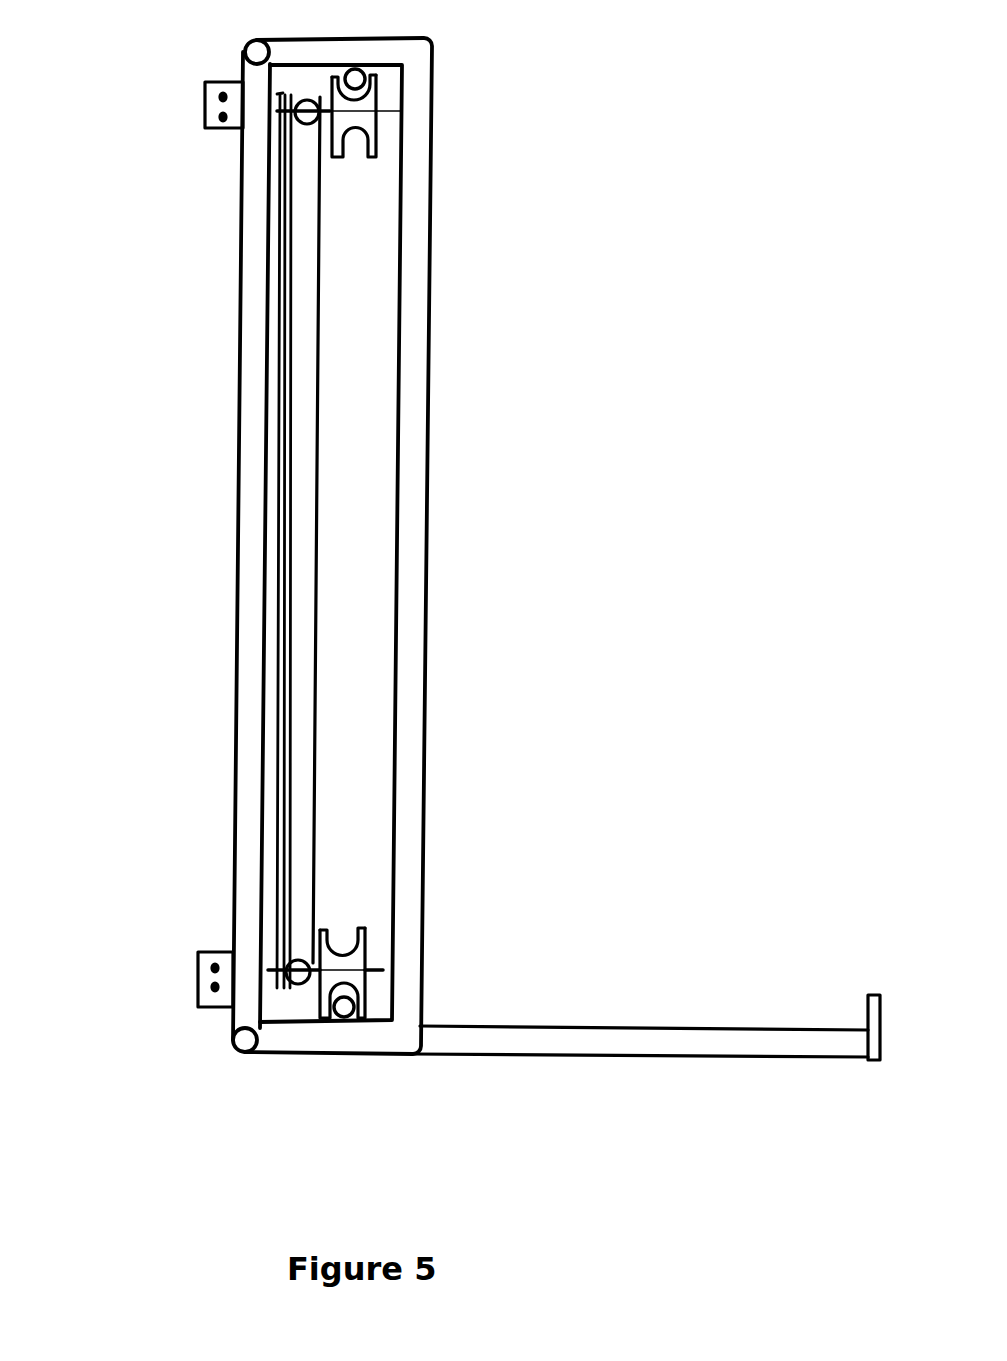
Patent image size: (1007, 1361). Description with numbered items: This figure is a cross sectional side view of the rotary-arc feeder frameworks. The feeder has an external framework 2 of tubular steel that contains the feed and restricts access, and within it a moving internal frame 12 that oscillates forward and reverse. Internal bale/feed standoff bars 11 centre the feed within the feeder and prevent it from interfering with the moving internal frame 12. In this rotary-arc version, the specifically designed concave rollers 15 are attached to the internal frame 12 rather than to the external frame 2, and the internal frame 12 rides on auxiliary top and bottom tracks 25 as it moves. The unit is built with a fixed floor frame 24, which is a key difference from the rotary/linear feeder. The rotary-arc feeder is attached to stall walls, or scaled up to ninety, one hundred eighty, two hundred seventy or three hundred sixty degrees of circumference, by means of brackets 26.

The external framework 2 is at (262, 742).
The bale/feed standoff bars 11 is at (428, 450).
The internal frame 12 is at (317, 292).
The concave rollers 15 is at (380, 123).
The fixed floor frame 24 is at (580, 1058).
The auxiliary tracks 25 is at (378, 82).
The brackets 26 is at (197, 980).